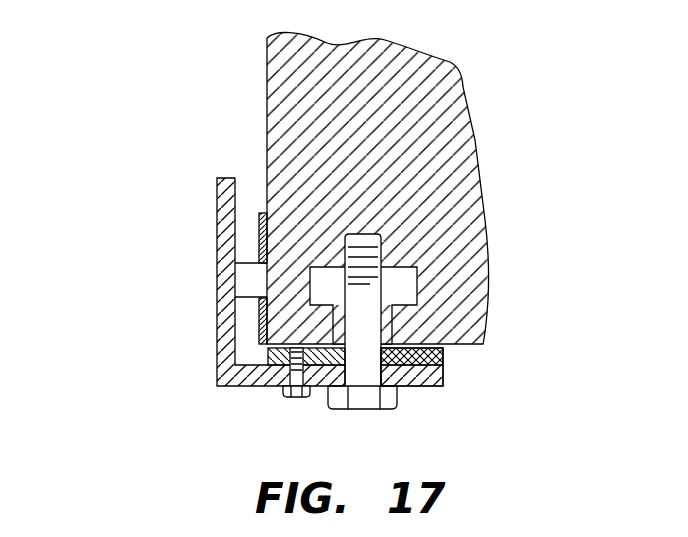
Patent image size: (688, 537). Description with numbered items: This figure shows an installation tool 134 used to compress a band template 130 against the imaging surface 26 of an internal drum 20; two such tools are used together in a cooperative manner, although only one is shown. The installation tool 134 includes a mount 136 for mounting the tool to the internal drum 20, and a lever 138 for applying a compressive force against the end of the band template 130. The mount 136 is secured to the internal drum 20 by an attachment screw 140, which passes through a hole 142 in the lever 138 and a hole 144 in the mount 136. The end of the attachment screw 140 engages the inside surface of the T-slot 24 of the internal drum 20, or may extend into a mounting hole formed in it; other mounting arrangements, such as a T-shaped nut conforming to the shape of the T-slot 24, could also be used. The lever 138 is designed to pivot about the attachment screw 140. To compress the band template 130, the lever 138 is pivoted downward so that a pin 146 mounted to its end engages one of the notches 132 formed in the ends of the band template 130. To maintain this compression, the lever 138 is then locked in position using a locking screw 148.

The internal drum 20 is at (444, 113).
The T-slot 24 is at (408, 288).
The imaging surface 26 is at (267, 82).
The band template 130 is at (262, 214).
The notches 132 is at (256, 313).
The installation tool 134 is at (184, 373).
The mount 136 is at (443, 362).
The lever 138 is at (228, 236).
The attachment screw 140 is at (390, 398).
The hole in the lever 142 is at (413, 384).
The hole in the mount 144 is at (443, 351).
The pin 146 is at (255, 284).
The locking screw 148 is at (292, 397).